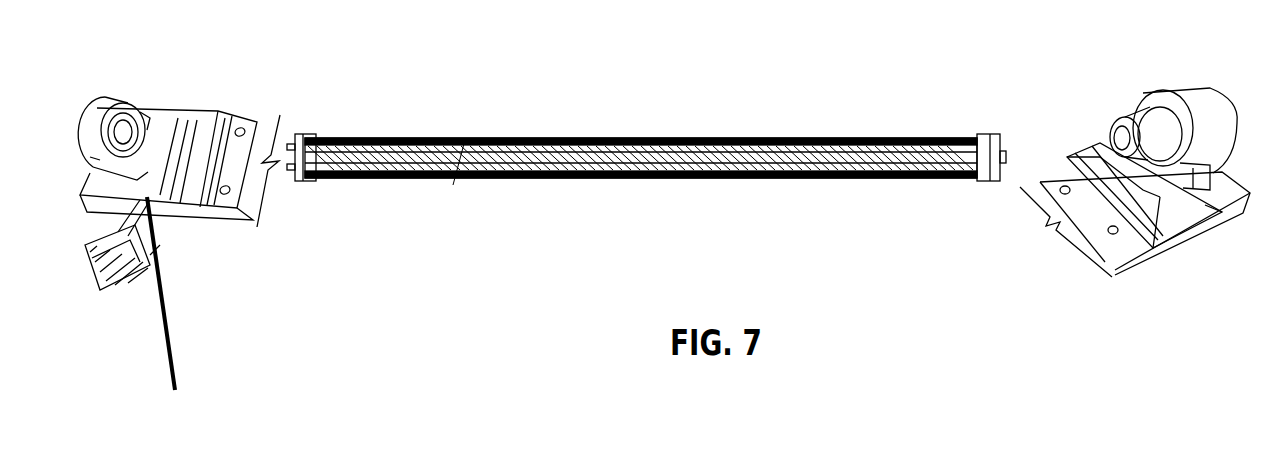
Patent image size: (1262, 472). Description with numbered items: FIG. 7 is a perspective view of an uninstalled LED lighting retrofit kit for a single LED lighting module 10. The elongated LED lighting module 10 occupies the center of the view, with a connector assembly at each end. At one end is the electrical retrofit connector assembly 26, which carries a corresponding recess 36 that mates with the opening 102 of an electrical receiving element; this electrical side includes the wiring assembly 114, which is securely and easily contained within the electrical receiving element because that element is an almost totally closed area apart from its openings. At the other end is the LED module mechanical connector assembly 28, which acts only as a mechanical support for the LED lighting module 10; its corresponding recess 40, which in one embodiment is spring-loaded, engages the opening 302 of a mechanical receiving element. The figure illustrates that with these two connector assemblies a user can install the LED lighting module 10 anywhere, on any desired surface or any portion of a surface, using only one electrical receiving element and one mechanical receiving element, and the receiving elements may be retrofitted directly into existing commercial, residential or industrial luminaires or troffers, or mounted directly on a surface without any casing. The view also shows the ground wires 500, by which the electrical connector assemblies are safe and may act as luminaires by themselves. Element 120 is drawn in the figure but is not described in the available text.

The LED lighting module 10 is at (700, 118).
The electrical retrofit connector assembly 26 is at (66, 146).
The LED module mechanical connector assembly 28 is at (1170, 66).
The corresponding recess 36 is at (130, 103).
The corresponding recess 40 is at (1108, 147).
The opening 102 is at (150, 112).
The wiring assembly 114 is at (93, 236).
The cable 120 is at (208, 246).
The opening 302 is at (1094, 156).
The ground wires 500 is at (168, 340).